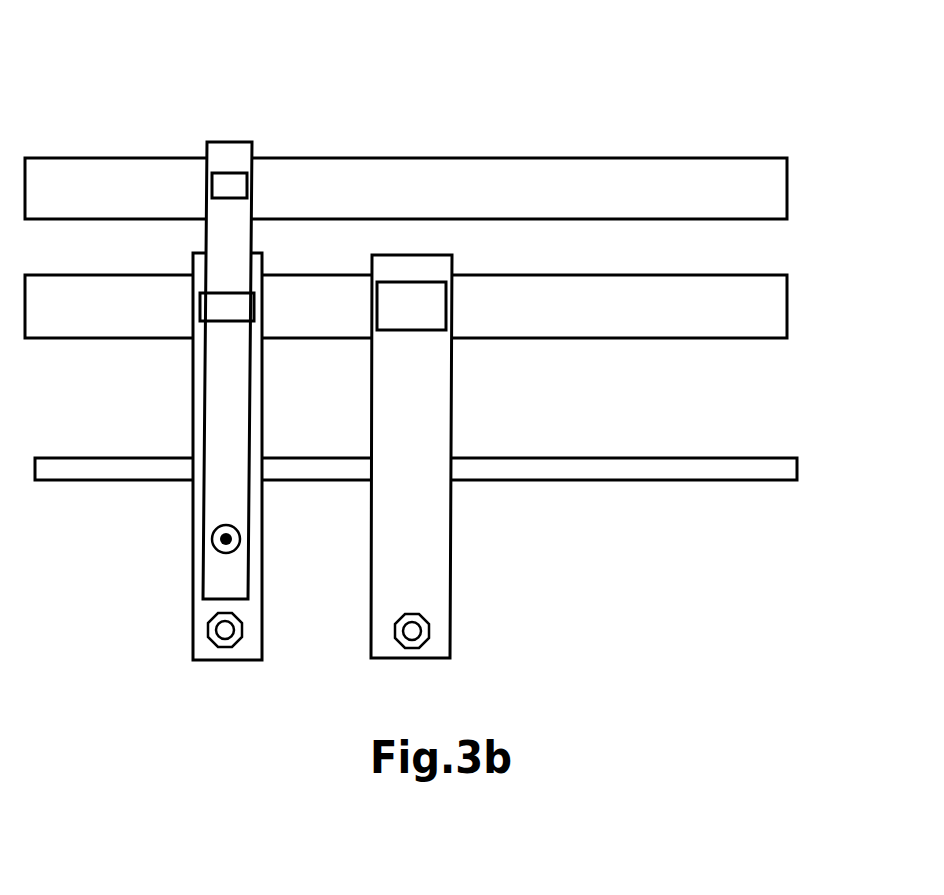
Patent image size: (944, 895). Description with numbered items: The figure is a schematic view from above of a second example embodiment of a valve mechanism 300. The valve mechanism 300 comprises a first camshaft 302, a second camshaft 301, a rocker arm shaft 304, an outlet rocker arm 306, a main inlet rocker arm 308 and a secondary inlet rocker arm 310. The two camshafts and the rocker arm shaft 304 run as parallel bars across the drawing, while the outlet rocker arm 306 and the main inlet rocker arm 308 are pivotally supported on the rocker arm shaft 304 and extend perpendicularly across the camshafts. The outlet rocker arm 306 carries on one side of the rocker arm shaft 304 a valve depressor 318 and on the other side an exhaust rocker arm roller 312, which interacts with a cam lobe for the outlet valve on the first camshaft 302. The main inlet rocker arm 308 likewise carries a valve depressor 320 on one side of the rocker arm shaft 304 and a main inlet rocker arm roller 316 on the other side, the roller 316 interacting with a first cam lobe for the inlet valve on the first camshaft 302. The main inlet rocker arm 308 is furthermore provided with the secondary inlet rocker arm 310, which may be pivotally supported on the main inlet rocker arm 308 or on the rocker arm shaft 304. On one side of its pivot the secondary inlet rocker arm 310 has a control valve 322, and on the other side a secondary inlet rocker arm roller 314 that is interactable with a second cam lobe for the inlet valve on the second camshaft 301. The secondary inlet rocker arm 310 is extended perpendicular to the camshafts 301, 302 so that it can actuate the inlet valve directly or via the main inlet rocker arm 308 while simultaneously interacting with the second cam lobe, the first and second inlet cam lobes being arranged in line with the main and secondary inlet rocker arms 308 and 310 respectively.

The valve mechanism 300 is at (88, 35).
The second camshaft 301 is at (755, 193).
The first camshaft 302 is at (758, 307).
The rocker arm shaft 304 is at (767, 470).
The outlet rocker arm 306 is at (436, 422).
The main inlet rocker arm 308 is at (253, 412).
The secondary inlet rocker arm 310 is at (243, 238).
The exhaust rocker arm roller 312 is at (432, 300).
The secondary inlet rocker arm roller 314 is at (237, 183).
The main inlet rocker arm roller 316 is at (200, 310).
The valve depressor 318 is at (413, 633).
The valve depressor 320 is at (210, 628).
The control valve 322 is at (211, 539).